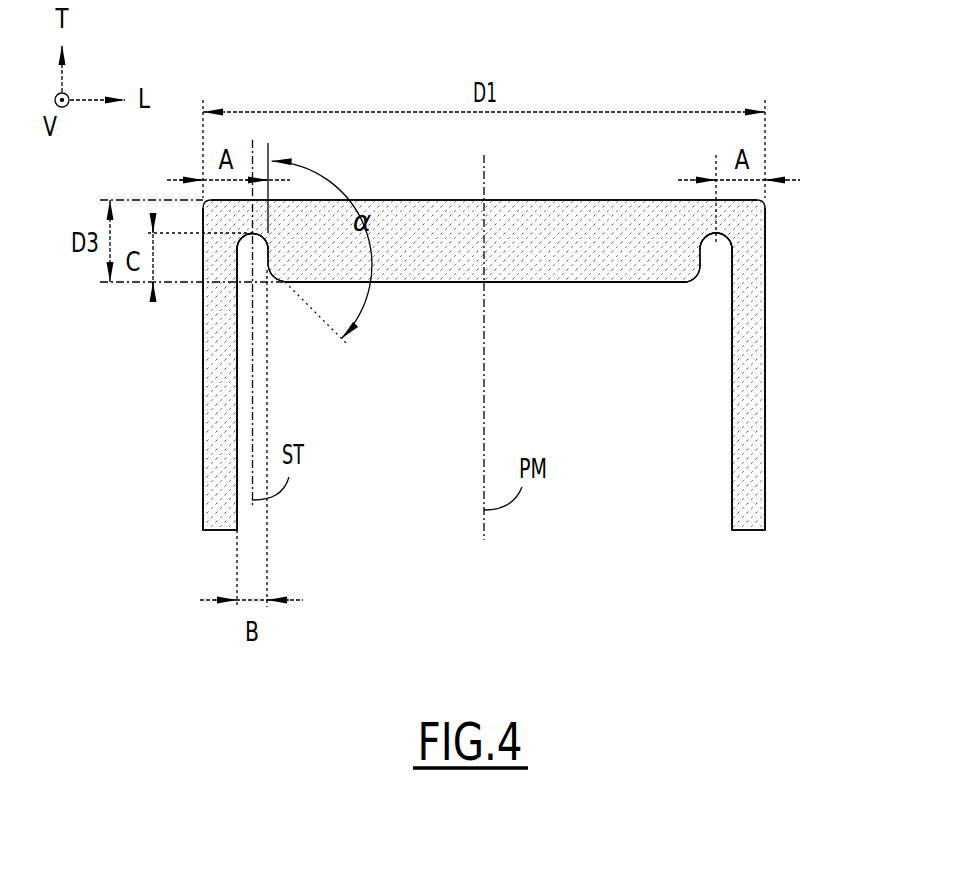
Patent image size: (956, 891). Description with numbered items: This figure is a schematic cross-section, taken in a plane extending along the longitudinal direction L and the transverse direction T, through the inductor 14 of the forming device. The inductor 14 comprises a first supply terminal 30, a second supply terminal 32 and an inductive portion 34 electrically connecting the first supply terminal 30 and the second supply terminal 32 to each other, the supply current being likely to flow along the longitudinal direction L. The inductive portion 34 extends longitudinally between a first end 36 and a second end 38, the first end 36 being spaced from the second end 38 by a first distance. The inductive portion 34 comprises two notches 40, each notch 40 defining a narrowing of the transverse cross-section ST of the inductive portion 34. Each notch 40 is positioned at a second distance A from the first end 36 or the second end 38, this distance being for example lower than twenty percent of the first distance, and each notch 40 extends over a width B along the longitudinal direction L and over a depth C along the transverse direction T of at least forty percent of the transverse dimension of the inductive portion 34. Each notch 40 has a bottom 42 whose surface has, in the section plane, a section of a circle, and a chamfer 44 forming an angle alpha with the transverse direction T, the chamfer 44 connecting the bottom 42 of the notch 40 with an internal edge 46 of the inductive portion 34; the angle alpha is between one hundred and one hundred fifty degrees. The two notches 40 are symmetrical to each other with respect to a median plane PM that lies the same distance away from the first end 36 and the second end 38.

The inductor 14 is at (798, 148).
The first supply terminal 30 is at (215, 438).
The second supply terminal 32 is at (743, 424).
The inductive portion 34 is at (570, 262).
The first end 36 is at (202, 257).
The second end 38 is at (766, 238).
The notch 40 is at (258, 270).
The bottom 42 is at (246, 233).
The chamfer 44 is at (275, 283).
The internal edge 46 is at (432, 282).